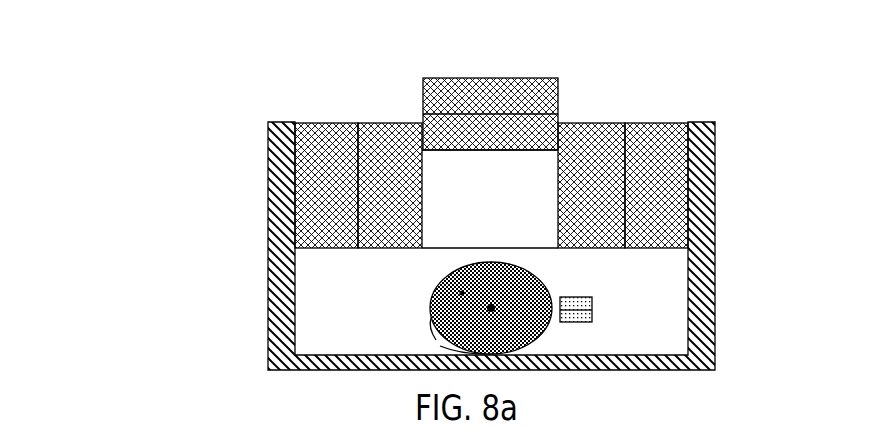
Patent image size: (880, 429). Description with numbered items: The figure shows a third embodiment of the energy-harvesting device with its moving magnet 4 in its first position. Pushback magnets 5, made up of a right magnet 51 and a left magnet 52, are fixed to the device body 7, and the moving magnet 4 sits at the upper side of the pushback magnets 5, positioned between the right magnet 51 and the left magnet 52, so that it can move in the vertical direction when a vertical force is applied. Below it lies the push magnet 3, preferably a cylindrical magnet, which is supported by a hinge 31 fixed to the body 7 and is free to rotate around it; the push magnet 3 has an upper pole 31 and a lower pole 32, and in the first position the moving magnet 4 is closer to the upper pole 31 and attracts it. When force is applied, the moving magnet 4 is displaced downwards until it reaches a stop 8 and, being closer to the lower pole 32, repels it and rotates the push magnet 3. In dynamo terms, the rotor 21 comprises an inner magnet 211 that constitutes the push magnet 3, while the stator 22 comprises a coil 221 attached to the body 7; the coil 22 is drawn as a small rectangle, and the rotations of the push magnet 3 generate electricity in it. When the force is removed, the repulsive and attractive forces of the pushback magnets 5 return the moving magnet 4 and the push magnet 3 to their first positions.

The magnet 3 is at (428, 302).
The moving magnet 4 is at (457, 75).
The pushback magnets 5 is at (307, 120).
The device body 7 is at (262, 208).
The stop 8 is at (495, 243).
The rotor 21 is at (447, 345).
The coil 22 is at (603, 293).
The hinge 31 is at (460, 285).
The lower pole 32 is at (530, 326).
The right magnet 51 is at (670, 110).
The left magnet 52 is at (356, 122).
The inner magnet 211 is at (425, 327).
The coil 221 is at (603, 317).